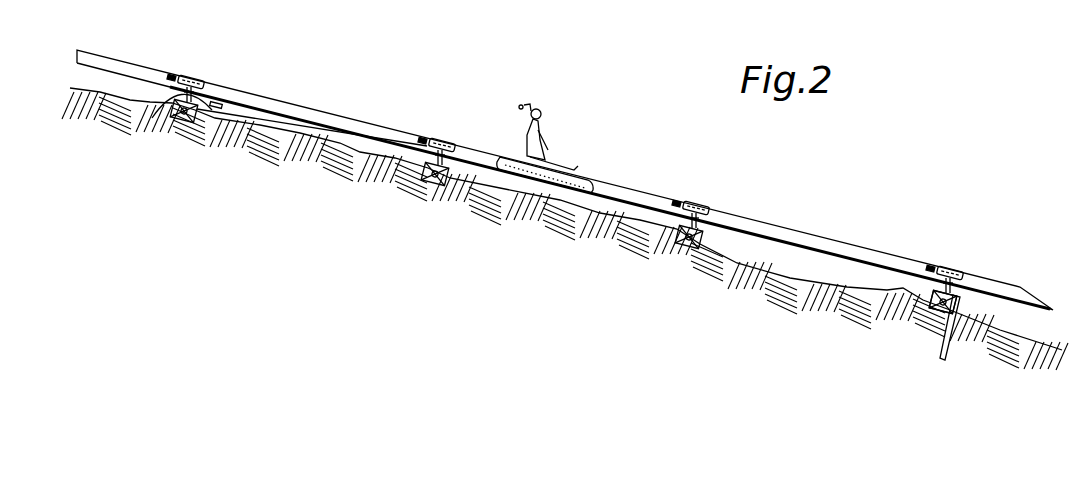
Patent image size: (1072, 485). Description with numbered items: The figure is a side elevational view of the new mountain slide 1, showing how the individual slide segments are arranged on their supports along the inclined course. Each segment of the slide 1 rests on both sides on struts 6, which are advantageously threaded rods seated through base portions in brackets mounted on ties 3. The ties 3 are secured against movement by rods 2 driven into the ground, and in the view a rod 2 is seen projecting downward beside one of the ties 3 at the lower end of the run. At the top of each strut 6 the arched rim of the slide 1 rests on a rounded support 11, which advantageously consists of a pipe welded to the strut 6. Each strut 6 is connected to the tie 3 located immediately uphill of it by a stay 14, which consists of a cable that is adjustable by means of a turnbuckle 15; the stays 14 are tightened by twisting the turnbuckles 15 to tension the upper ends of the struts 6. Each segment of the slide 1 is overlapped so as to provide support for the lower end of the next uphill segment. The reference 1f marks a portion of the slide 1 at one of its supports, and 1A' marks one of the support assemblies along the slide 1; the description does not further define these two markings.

The mountain slide 1 is at (862, 253).
The rail mounting plate 1f is at (922, 280).
The rail support clamp 1A' is at (414, 185).
The rod 2 is at (947, 350).
The tie 3 is at (918, 325).
The strut 6 is at (143, 114).
The rounded support 11 is at (183, 77).
The stay 14 is at (242, 113).
The turnbuckle 15 is at (216, 110).